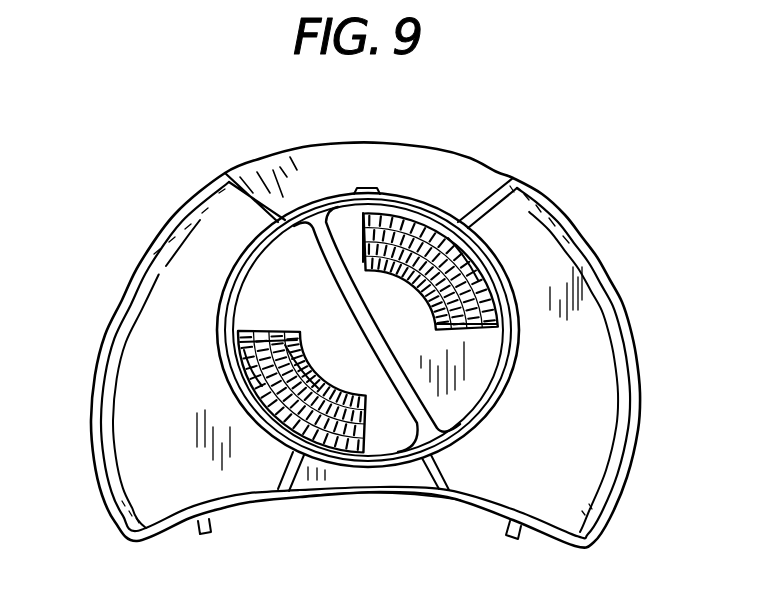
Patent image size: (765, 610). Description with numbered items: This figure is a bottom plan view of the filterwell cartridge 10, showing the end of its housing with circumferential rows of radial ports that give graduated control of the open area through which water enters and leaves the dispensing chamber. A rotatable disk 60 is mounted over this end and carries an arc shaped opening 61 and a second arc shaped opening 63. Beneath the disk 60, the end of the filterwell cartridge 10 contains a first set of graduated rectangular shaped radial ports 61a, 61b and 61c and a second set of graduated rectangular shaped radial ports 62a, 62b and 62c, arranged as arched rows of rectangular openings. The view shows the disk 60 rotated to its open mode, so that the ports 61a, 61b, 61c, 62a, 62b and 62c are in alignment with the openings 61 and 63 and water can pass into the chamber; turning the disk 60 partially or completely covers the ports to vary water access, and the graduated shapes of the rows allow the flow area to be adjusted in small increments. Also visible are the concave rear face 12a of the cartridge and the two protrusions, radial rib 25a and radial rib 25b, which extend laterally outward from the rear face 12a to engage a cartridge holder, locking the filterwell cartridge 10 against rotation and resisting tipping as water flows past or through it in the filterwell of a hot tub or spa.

The filterwell cartridge 10 is at (616, 257).
The concave rear face 12a is at (386, 497).
The radial rib 25a is at (212, 535).
The radial rib 25b is at (510, 538).
The rotatable disk 60 is at (311, 206).
The arc shaped opening 61 is at (279, 338).
The graduated rectangular shaped radial port 61a is at (288, 334).
The graduated rectangular shaped radial port 61b is at (252, 352).
The graduated rectangular shaped radial port 61c is at (253, 378).
The graduated rectangular shaped radial port 62a is at (386, 208).
The graduated rectangular shaped radial port 62b is at (481, 274).
The graduated rectangular shaped radial port 62c is at (487, 326).
The arc shaped opening 63 is at (356, 222).